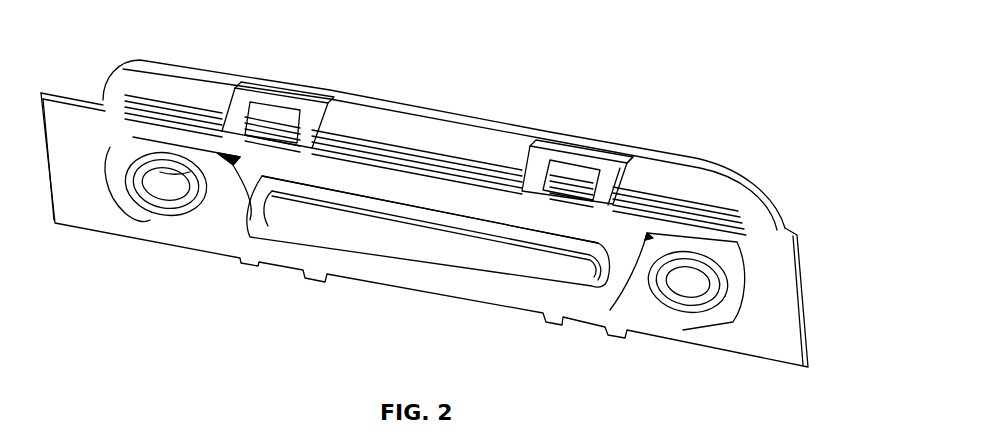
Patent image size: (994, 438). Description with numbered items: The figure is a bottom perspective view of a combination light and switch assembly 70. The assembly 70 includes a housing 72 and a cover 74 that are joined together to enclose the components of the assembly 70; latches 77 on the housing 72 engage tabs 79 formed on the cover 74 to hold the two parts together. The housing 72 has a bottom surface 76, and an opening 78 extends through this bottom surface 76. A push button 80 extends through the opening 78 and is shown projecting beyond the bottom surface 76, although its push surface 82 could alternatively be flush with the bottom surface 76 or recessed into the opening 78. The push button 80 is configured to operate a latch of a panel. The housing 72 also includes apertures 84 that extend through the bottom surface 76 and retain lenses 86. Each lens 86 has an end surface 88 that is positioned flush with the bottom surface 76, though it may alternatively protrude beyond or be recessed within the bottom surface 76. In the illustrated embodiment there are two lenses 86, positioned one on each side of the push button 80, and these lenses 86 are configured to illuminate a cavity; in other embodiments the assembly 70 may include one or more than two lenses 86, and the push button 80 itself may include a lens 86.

The assembly 70 is at (686, 46).
The housing 72 is at (790, 292).
The cover 74 is at (737, 173).
The bottom surface 76 is at (95, 201).
The latches 77 is at (245, 98).
The opening 78 is at (255, 224).
The tabs 79 is at (272, 117).
The push button 80 is at (387, 243).
The push surface 82 is at (480, 265).
The apertures 84 is at (148, 212).
The lenses 86 is at (160, 172).
The end surface 88 is at (182, 196).